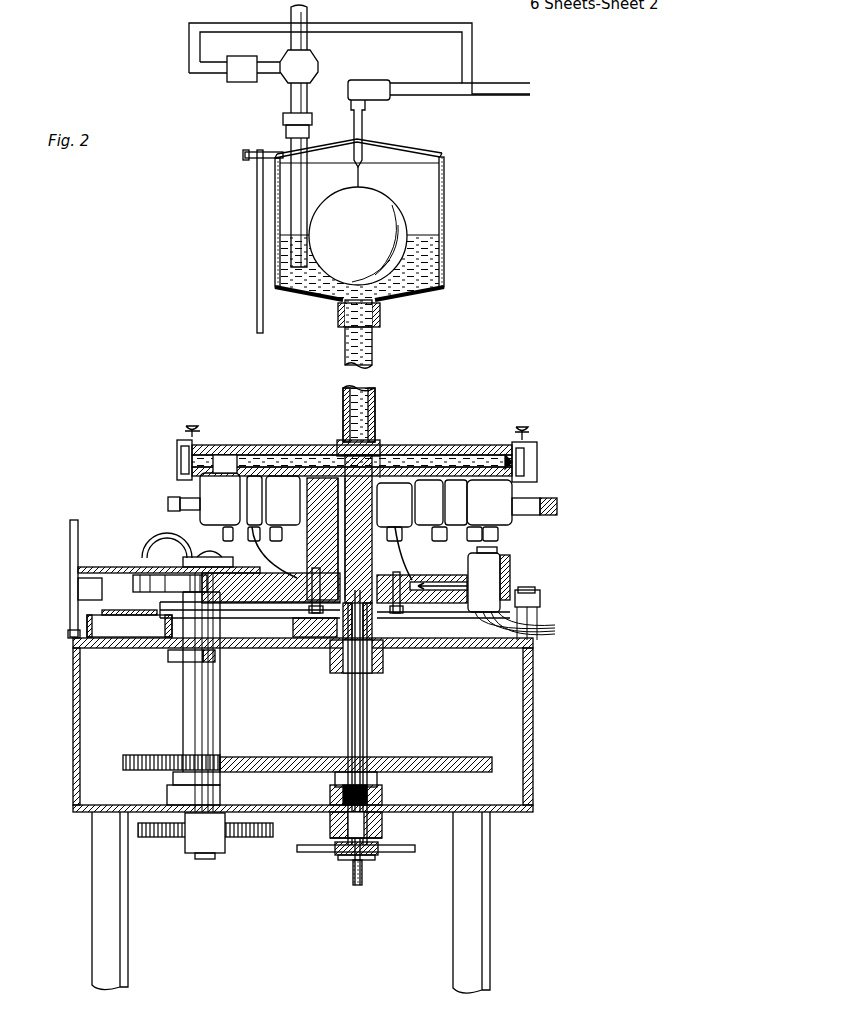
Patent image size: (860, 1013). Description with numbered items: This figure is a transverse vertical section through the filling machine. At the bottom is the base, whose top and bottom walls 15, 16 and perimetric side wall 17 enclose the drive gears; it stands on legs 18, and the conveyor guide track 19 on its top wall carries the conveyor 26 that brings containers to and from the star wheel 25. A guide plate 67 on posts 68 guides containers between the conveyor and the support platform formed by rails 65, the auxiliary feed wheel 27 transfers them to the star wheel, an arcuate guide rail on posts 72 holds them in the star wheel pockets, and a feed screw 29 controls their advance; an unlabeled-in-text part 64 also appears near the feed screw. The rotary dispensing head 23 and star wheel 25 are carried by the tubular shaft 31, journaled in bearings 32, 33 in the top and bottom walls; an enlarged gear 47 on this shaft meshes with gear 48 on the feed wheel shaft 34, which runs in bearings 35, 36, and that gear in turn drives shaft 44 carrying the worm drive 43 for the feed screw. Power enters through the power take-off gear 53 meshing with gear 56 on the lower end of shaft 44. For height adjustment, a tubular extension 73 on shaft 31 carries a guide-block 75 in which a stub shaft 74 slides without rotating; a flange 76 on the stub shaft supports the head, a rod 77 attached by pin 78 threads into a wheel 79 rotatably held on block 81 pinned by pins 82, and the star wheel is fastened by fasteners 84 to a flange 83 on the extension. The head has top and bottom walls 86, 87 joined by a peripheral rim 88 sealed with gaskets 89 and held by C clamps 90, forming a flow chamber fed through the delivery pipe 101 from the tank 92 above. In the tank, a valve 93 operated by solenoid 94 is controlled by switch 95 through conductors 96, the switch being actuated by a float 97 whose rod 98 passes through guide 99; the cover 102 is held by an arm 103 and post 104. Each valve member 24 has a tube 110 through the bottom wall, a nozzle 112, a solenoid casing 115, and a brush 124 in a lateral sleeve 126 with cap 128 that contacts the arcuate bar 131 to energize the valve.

The top wall 15 is at (462, 650).
The bottom wall 16 is at (440, 808).
The perimetric side wall 17 is at (532, 740).
The legs 18 is at (117, 918).
The conveyor guide track 19 is at (158, 627).
The rotary dispensing head 23 is at (352, 438).
The valve members 24 is at (529, 528).
The star wheel 25 is at (389, 569).
The conveyor 26 is at (130, 605).
The auxiliary feed wheel 27 is at (140, 575).
The feed screw 29 is at (158, 552).
The shaft 31 is at (368, 728).
The bearing 32 is at (384, 660).
The bearing 33 is at (384, 791).
The shaft 34 is at (215, 694).
The bearing 35 is at (226, 657).
The bearing 36 is at (217, 797).
The worm drive 43 is at (208, 560).
The shaft 44 is at (214, 721).
The enlarged gear 47 is at (407, 762).
The gear 48 is at (147, 755).
The power take-off gear 53 is at (222, 832).
The gear 56 is at (152, 838).
The cam arc 64 is at (175, 538).
The rails 65 is at (527, 626).
The guide plate 67 is at (90, 565).
The posts 68 is at (75, 605).
The posts 72 is at (542, 608).
The tubular extension 73 is at (340, 553).
The stub shaft 74 is at (366, 532).
The guide-block 75 is at (379, 503).
The flange 76 is at (388, 478).
The rod 77 is at (361, 714).
The pin 78 is at (366, 614).
The wheel 79 is at (344, 855).
The block 81 is at (383, 836).
The pins 82 is at (384, 822).
The flange 83 is at (250, 620).
The fasteners 84 is at (413, 605).
The top wall 86 is at (456, 448).
The bottom wall 87 is at (283, 470).
The peripheral rim 88 is at (524, 464).
The gaskets 89 is at (530, 440).
The C clamps 90 is at (183, 432).
The tank 92 is at (446, 210).
The valve 93 is at (319, 67).
The solenoid 94 is at (241, 75).
The switch 95 is at (372, 84).
The conductors 96 is at (433, 32).
The float 97 is at (385, 213).
The rod 98 is at (361, 178).
The guide 99 is at (364, 133).
The delivery pipe 101 is at (373, 347).
The cover 102 is at (405, 153).
The arm 103 is at (272, 152).
The post 104 is at (257, 213).
The tube 110 is at (234, 465).
The nozzle 112 is at (230, 540).
The casing 115 is at (219, 483).
The brush 124 is at (166, 500).
The lateral sleeve 126 is at (190, 510).
The cap 128 is at (177, 465).
The arcuate bar 131 is at (558, 507).